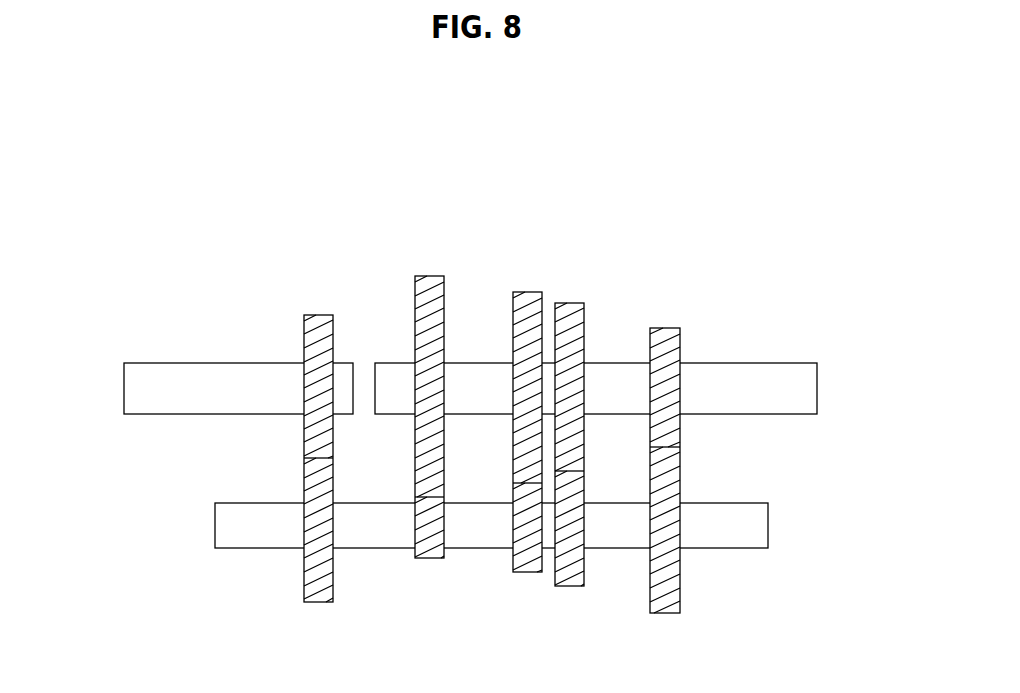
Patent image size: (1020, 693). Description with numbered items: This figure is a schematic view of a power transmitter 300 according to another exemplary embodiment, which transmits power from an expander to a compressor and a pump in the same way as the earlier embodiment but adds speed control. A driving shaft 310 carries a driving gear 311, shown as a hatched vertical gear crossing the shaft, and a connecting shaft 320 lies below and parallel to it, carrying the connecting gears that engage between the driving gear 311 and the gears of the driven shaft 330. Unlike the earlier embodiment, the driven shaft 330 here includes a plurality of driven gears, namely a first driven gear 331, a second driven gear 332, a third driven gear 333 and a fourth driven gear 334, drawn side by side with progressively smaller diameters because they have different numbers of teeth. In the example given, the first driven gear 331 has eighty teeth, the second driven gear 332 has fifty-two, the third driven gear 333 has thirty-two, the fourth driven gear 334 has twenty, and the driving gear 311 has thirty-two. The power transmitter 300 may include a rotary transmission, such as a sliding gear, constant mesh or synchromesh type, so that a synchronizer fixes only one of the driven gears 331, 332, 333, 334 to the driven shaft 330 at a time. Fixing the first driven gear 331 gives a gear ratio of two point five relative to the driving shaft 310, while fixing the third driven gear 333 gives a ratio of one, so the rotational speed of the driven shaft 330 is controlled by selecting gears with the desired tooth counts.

The power transmitter 300 is at (501, 163).
The driving shaft 310 is at (123, 388).
The driving gear 311 is at (318, 315).
The connecting shaft 320 is at (769, 525).
The driven shaft 330 is at (818, 385).
The first driven gear 331 is at (428, 276).
The second driven gear 332 is at (527, 292).
The third driven gear 333 is at (578, 303).
The fourth driven gear 334 is at (663, 328).